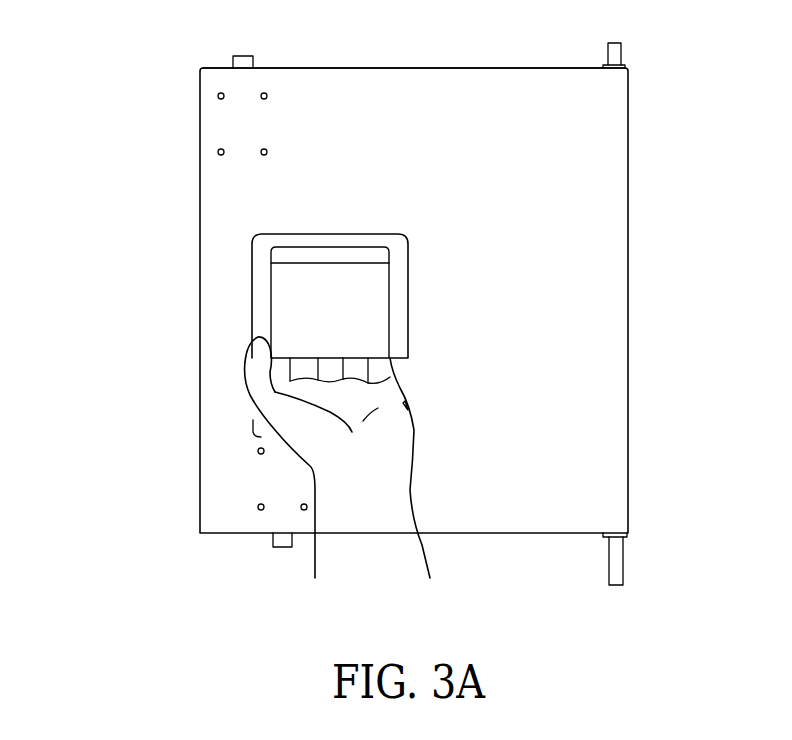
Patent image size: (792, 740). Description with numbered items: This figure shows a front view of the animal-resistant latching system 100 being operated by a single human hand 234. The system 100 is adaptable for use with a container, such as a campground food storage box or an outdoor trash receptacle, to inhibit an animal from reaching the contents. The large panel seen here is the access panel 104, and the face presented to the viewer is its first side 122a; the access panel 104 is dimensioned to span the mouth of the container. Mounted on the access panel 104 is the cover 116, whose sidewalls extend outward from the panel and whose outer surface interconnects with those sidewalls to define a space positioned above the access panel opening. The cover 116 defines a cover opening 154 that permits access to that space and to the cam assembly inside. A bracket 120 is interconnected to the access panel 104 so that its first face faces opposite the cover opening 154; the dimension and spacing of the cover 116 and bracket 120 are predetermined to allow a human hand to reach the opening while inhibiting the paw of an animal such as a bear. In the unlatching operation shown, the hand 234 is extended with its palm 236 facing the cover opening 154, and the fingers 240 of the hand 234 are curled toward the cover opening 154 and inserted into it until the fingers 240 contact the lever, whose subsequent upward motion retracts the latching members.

The animal-resistant latching system 100 is at (686, 97).
The access panel 104 is at (500, 90).
The first side 122a is at (375, 92).
The cover 116 is at (290, 298).
The cover opening 154 is at (272, 378).
The bracket 120 is at (252, 432).
The human hand 234 is at (293, 453).
The palm 236 is at (365, 407).
The fingers 240 is at (383, 372).